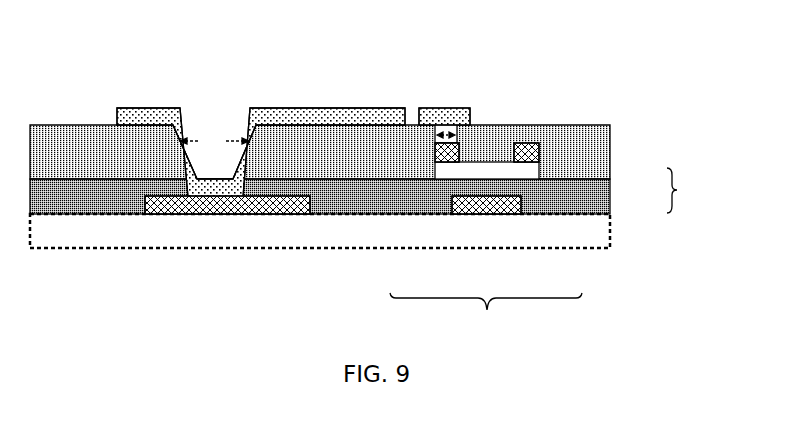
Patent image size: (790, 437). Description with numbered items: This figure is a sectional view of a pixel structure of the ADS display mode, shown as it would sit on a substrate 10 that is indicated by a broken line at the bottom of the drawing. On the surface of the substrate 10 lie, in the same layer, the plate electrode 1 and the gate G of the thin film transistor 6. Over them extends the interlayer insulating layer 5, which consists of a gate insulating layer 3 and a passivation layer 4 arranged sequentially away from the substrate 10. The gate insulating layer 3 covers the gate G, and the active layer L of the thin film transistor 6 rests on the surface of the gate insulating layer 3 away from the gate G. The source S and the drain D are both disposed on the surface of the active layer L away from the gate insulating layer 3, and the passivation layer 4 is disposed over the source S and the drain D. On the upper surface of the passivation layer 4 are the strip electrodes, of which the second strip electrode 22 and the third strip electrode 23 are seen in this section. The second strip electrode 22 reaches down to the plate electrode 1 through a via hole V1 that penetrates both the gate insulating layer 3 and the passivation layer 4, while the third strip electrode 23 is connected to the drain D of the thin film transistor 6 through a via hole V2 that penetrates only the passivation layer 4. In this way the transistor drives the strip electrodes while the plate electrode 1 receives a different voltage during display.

The plate electrode 1 is at (217, 212).
The gate insulating layer 3 is at (592, 192).
The passivation layer 4 is at (592, 153).
The interlayer insulating layer 5 is at (362, 172).
The thin film transistor 6 is at (484, 240).
The substrate 10 is at (595, 227).
The second strip electrode 22 is at (173, 122).
The third strip electrode 23 is at (442, 130).
The via hole V1 is at (214, 142).
The via hole V2 is at (444, 137).
The drain D is at (440, 146).
The active layer L is at (452, 170).
The gate G is at (475, 205).
The source S is at (520, 150).